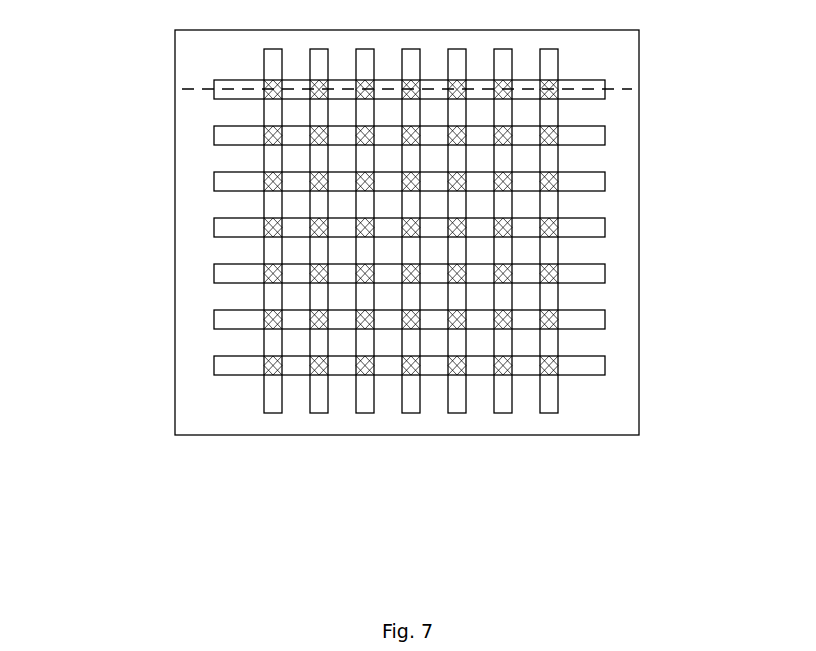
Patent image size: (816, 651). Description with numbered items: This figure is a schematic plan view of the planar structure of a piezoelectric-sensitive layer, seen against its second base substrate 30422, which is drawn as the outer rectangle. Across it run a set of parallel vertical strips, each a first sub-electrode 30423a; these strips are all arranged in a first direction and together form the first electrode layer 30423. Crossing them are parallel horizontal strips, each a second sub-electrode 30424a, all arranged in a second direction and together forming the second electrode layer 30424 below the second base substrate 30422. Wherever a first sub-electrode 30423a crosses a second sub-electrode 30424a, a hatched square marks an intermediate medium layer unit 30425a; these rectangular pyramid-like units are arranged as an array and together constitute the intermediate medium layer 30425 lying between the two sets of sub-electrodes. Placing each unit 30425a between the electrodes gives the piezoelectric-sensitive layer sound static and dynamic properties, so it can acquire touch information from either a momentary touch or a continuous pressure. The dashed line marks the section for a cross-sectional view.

The second base substrate 30422 is at (464, 233).
The first electrode layer 30423 is at (411, 289).
The first sub-electrode 30423a is at (513, 478).
The second electrode layer 30424 is at (510, 227).
The second sub-electrode 30424a is at (743, 295).
The intermediate medium layer 30425 is at (288, 227).
The intermediate medium layer unit 30425a is at (268, 227).